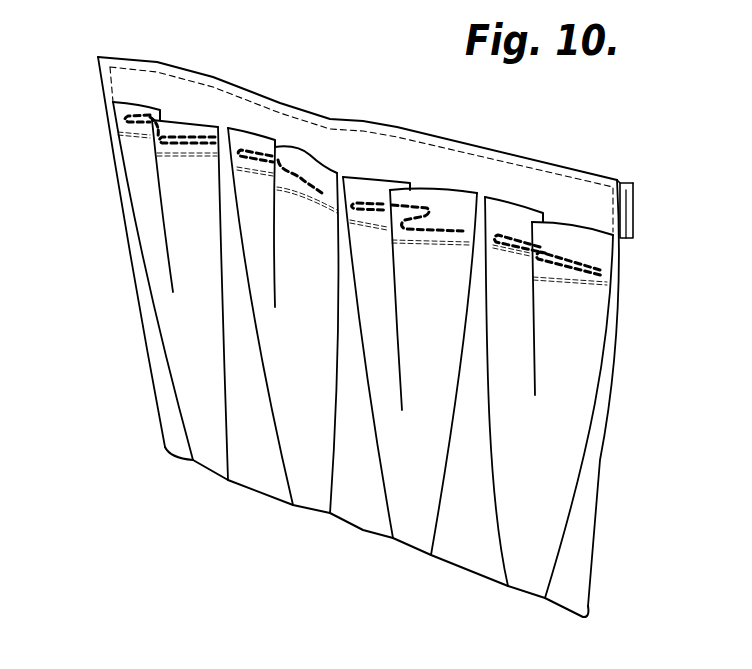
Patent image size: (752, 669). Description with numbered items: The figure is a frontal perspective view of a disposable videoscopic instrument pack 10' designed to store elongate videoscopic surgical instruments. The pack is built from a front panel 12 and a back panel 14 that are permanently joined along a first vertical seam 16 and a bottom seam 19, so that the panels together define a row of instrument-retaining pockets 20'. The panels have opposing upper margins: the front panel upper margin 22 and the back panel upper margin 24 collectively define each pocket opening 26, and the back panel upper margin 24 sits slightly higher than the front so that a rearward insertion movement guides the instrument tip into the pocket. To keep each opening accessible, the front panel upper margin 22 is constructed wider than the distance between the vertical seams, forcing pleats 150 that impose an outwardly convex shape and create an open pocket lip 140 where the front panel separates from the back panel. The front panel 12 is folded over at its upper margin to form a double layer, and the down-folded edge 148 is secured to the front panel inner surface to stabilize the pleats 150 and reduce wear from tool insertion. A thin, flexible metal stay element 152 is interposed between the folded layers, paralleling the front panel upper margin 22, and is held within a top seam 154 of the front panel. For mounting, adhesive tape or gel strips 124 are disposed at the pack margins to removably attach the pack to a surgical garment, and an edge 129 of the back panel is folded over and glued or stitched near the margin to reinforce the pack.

The videoscopic instrument pack 10' is at (374, 320).
The front panel 12 is at (602, 253).
The back panel 14 is at (538, 188).
The first vertical seam 16 is at (143, 272).
The bottom seam 19 is at (212, 468).
The pocket 20' is at (260, 272).
The front panel upper margin 22 is at (140, 102).
The back panel upper margin 24 is at (492, 141).
The pocket opening 26 is at (296, 138).
The adhesive tape or gel strip 124 is at (637, 199).
The edge of the back panel 129 is at (632, 182).
The open pocket lip 140 is at (415, 188).
The down-folded edge 148 is at (292, 193).
The pleats 150 is at (153, 205).
The stay element 152 is at (362, 207).
The top seam 154 is at (608, 253).